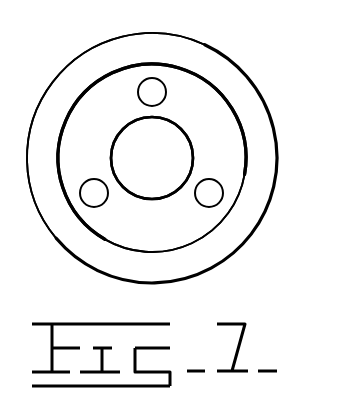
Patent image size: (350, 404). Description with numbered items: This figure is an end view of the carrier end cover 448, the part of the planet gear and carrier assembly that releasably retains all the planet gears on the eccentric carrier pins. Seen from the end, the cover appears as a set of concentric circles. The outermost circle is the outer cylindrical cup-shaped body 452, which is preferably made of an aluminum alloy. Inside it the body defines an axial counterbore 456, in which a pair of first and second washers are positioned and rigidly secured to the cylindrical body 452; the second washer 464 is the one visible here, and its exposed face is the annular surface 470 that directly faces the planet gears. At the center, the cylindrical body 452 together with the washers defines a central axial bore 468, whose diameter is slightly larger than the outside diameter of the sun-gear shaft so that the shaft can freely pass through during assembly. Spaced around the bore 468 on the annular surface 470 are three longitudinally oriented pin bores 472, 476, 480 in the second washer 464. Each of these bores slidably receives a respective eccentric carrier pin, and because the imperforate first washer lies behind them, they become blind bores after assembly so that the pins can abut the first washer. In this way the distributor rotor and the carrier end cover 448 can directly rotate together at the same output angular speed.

The carrier end cover 448 is at (232, 47).
The outer cylindrical cup-shaped body 452 is at (247, 109).
The axial counterbore 456 is at (235, 141).
The second washer 464 is at (216, 119).
The central axial bore 468 is at (170, 193).
The annular surface 470 is at (90, 120).
The pin bore 472 is at (152, 82).
The pin bore 476 is at (211, 201).
The pin bore 480 is at (91, 208).